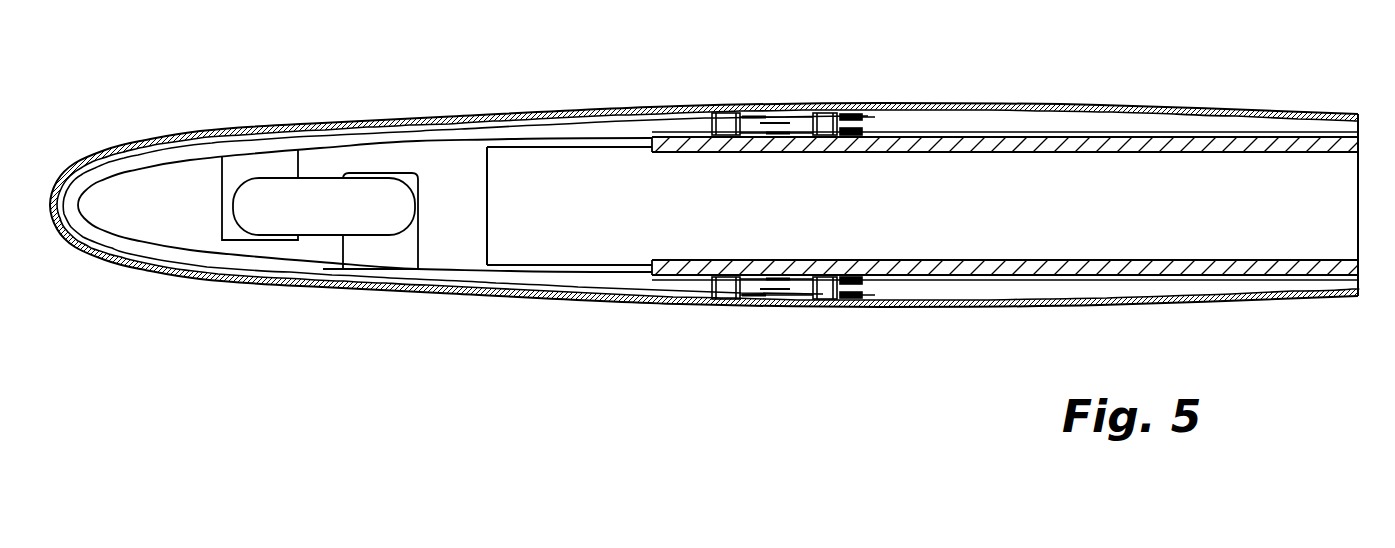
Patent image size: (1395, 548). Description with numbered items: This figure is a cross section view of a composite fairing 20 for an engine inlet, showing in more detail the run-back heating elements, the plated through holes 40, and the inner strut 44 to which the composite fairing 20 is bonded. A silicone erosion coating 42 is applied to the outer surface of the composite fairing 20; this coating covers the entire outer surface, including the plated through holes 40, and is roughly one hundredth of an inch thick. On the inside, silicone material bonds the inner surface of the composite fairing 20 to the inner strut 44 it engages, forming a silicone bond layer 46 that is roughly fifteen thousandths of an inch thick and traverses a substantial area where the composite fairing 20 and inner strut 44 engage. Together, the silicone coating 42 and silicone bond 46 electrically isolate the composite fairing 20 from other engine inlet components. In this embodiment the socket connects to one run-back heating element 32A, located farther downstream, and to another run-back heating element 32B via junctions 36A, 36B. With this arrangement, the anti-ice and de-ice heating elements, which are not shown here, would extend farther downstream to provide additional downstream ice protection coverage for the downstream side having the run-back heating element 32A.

The composite fairing 20 is at (1290, 98).
The run-back heating element 32A is at (460, 278).
The run-back heating element 32B is at (420, 142).
The junction 36A is at (378, 248).
The junction 36B is at (229, 187).
The plated through holes 40 is at (823, 121).
The silicone erosion coating 42 is at (300, 121).
The inner strut 44 is at (962, 216).
The silicone bond layer 46 is at (1140, 143).